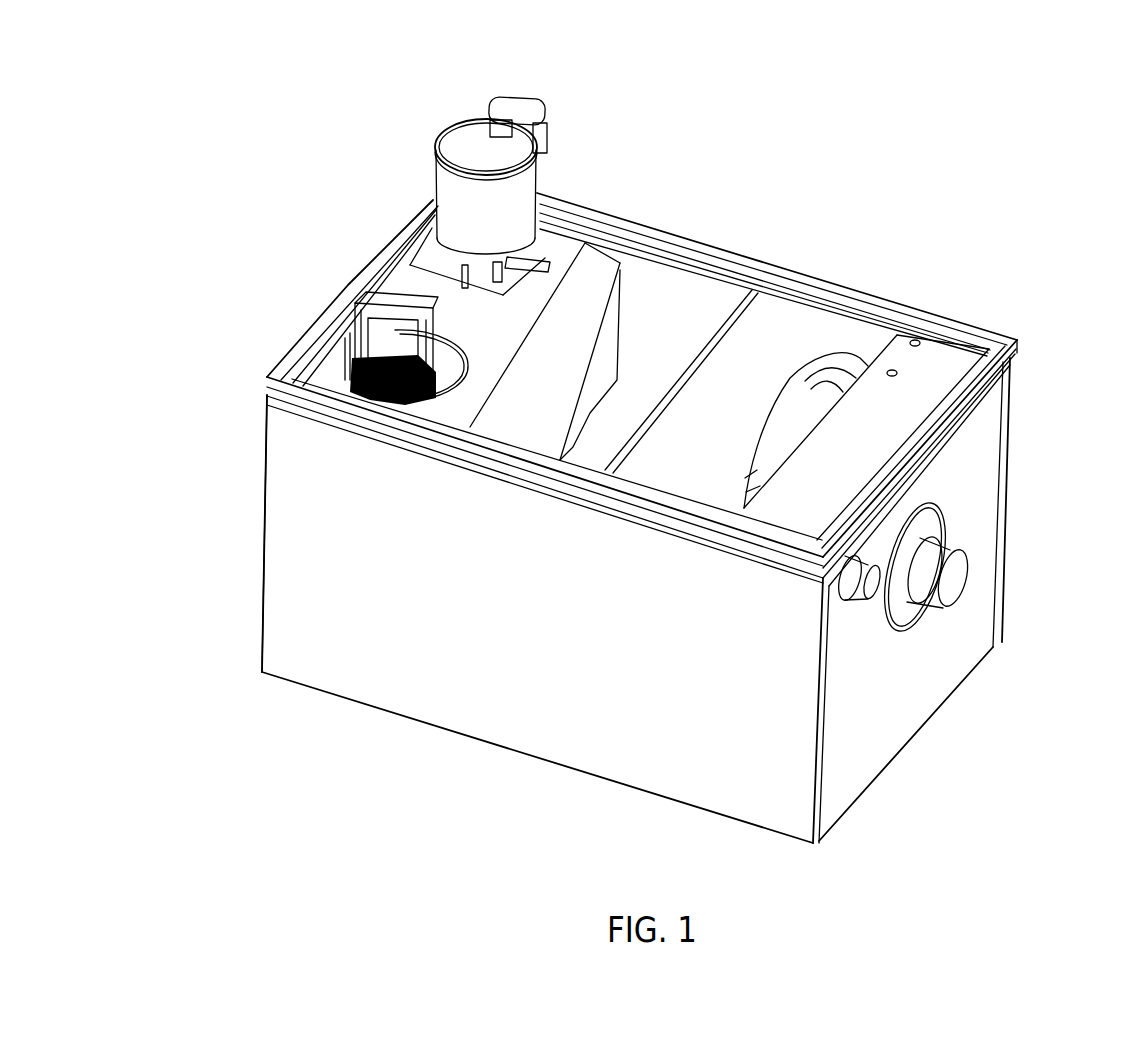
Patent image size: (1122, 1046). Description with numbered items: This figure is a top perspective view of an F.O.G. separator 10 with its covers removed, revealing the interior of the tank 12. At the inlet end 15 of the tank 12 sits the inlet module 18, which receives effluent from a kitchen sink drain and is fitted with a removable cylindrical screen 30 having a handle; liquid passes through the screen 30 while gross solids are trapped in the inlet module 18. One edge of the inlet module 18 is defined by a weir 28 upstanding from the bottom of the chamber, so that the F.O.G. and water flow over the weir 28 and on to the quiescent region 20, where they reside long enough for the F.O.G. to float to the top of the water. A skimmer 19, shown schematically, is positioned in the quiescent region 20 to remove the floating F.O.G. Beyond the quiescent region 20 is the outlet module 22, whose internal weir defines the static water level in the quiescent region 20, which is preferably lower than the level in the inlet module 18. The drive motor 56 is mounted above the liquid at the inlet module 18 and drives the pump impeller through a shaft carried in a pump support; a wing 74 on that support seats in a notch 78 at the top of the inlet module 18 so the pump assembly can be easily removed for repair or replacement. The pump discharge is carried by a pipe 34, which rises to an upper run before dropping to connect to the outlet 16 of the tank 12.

The F.O.G. separator 10 is at (890, 172).
The tank 12 is at (480, 712).
The inlet end 15 is at (283, 548).
The outlet 16 is at (937, 550).
The inlet module 18 is at (607, 310).
The skimmer 19 is at (715, 307).
The quiescent region 20 is at (684, 300).
The outlet module 22 is at (923, 365).
The weir 28 is at (345, 358).
The removable cylindrical screen 30 is at (360, 385).
The pipe 34 is at (808, 402).
The drive motor 56 is at (517, 190).
The wing 74 is at (450, 258).
The notch 78 is at (456, 286).